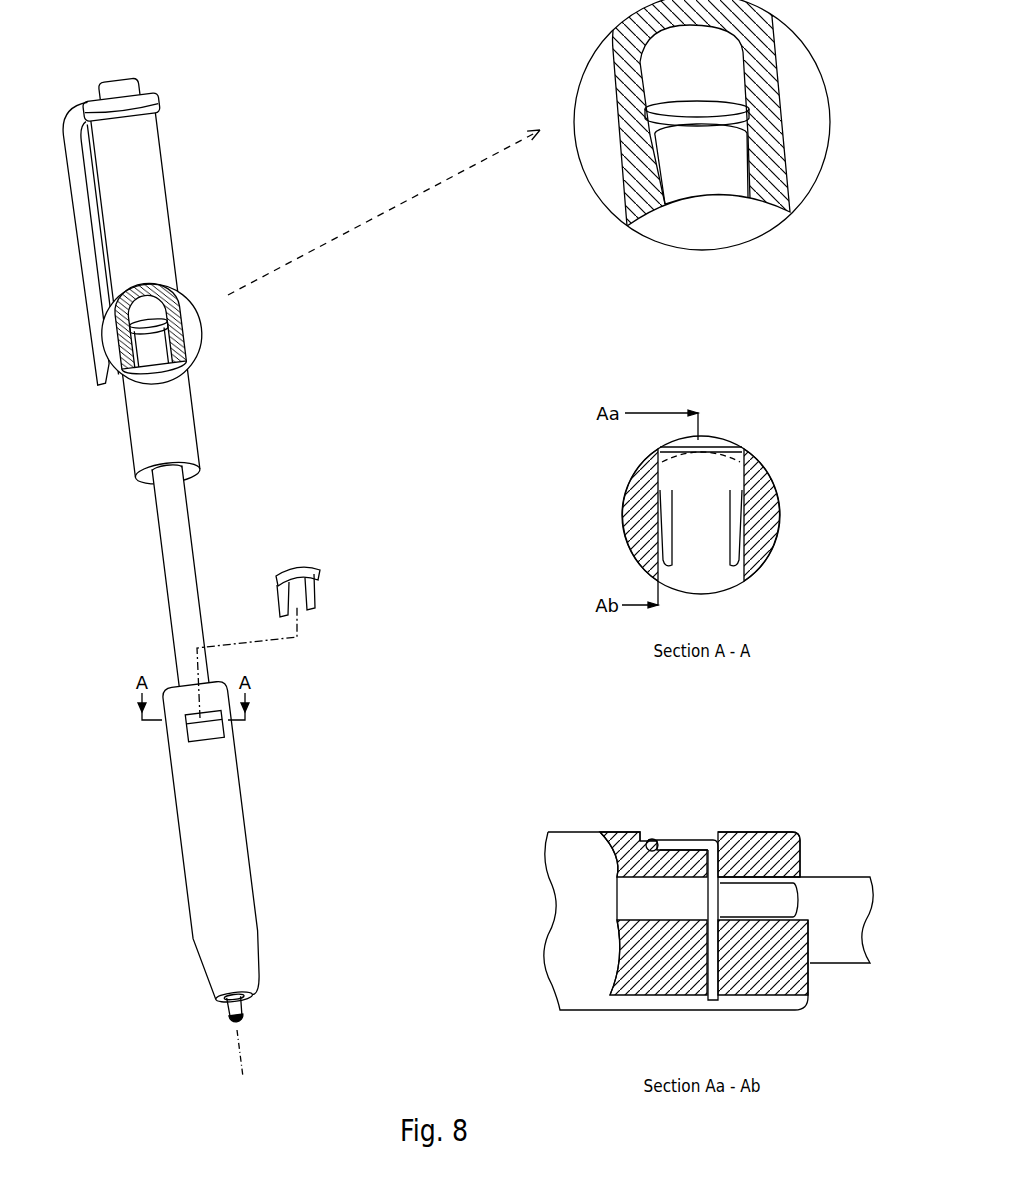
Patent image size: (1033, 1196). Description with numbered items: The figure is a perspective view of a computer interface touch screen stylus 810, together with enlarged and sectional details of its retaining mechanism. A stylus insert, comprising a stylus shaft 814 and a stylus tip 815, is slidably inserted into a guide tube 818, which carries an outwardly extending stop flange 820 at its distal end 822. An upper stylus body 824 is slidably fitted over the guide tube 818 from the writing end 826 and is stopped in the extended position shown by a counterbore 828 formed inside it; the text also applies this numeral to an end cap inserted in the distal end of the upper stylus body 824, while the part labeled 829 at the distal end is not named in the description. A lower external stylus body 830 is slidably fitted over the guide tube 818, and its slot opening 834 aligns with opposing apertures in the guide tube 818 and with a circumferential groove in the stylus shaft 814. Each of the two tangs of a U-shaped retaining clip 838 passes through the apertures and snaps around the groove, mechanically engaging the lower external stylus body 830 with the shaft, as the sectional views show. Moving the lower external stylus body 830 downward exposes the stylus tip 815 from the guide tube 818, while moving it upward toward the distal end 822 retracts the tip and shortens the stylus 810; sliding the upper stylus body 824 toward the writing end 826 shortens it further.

The stylus 810 is at (250, 507).
The stylus shaft 814 is at (235, 1000).
The stylus tip 815 is at (240, 1020).
The guide tube 818 is at (180, 585).
The stop flange 820 is at (663, 100).
The distal end 822 is at (117, 71).
The upper stylus body 824 is at (138, 202).
The writing end 826 is at (244, 1068).
The counterbore 828 is at (652, 142).
The collar 829 is at (127, 88).
The lower external stylus body 830 is at (197, 808).
The slot opening 834 is at (220, 718).
The U-shaped retaining clip 838 is at (723, 463).